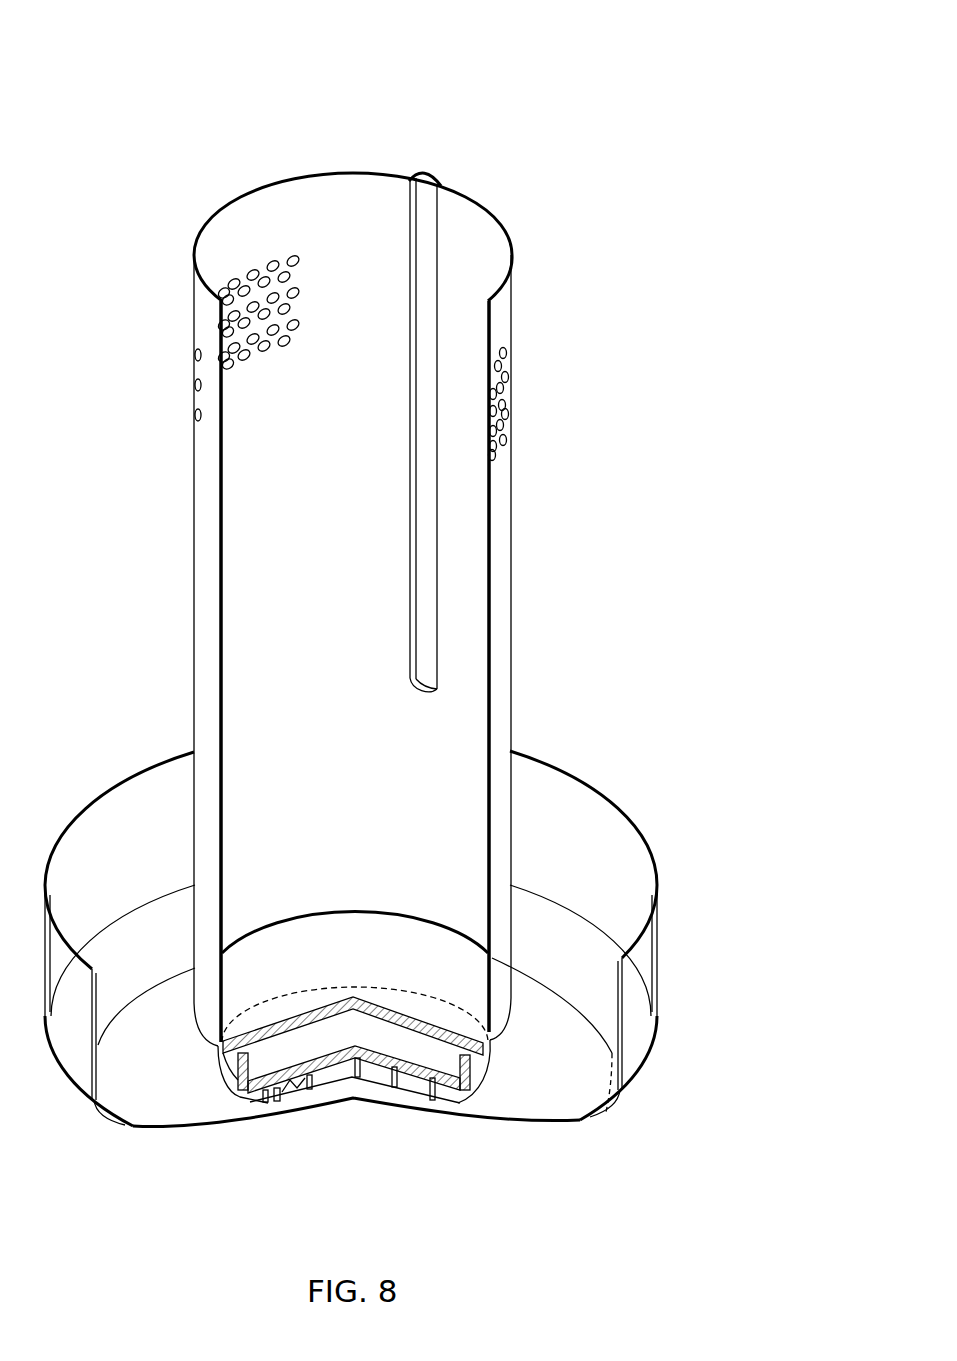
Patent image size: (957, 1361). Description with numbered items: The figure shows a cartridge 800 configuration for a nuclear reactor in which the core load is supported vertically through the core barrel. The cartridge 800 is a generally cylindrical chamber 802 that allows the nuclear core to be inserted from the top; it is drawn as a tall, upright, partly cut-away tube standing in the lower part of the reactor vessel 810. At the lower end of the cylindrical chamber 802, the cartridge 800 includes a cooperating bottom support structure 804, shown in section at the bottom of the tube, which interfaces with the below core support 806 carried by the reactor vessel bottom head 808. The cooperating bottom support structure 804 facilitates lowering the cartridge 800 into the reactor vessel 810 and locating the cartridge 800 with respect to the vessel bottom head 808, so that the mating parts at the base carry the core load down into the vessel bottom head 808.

The cartridge 800 is at (452, 74).
The cylindrical chamber 802 is at (275, 638).
The cooperating bottom support structure 804 is at (472, 1058).
The below core support 806 is at (473, 1102).
The reactor vessel bottom head 808 is at (215, 1136).
The reactor vessel 810 is at (652, 940).